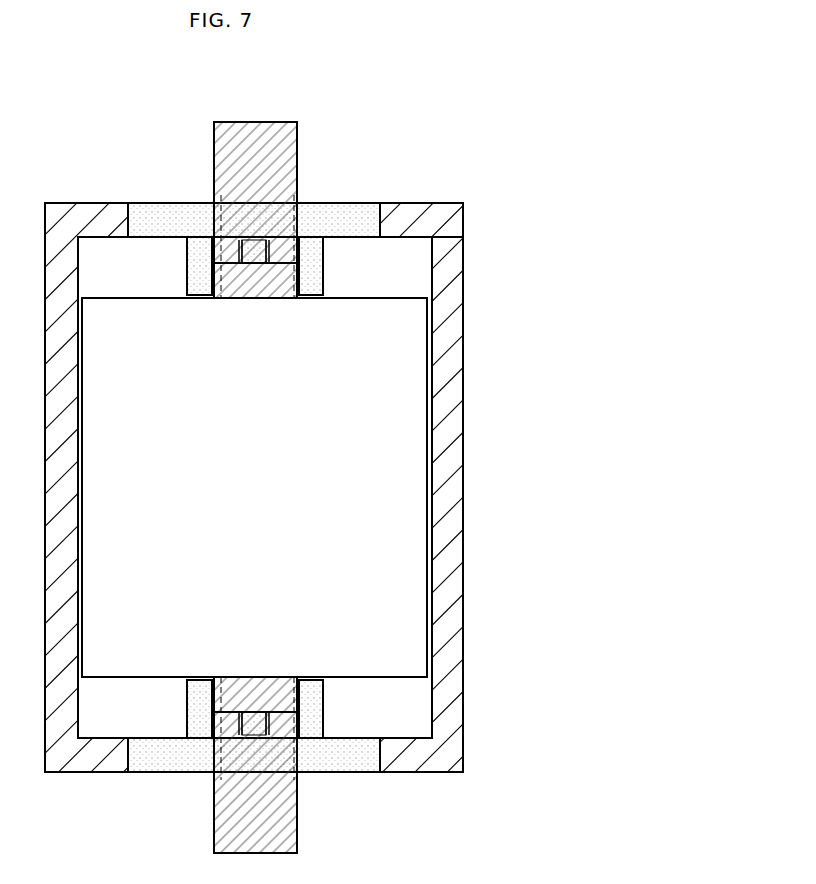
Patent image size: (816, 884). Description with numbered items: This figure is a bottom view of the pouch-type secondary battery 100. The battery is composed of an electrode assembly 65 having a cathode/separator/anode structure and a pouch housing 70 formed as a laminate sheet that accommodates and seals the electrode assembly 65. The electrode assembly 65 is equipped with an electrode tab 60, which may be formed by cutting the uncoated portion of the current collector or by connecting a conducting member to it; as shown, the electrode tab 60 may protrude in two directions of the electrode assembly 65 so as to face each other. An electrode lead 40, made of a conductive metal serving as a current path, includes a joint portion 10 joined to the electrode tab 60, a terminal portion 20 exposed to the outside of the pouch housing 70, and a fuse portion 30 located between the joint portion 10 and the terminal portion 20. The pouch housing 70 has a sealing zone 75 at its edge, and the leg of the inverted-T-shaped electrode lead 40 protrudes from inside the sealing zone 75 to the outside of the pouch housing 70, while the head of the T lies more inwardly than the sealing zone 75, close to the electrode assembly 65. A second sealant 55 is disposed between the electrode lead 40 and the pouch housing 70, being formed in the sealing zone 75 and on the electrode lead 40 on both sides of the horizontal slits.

The pouch-type secondary battery 100 is at (434, 128).
The sealing zone 75 is at (447, 214).
The pouch housing 70 is at (407, 207).
The second sealant 55 is at (350, 209).
The electrode assembly 65 is at (382, 306).
The electrode lead 40 is at (150, 128).
The terminal portion 20 is at (228, 136).
The fuse portion 30 is at (207, 238).
The joint portion 10 is at (212, 282).
The electrode tab 60 is at (291, 278).